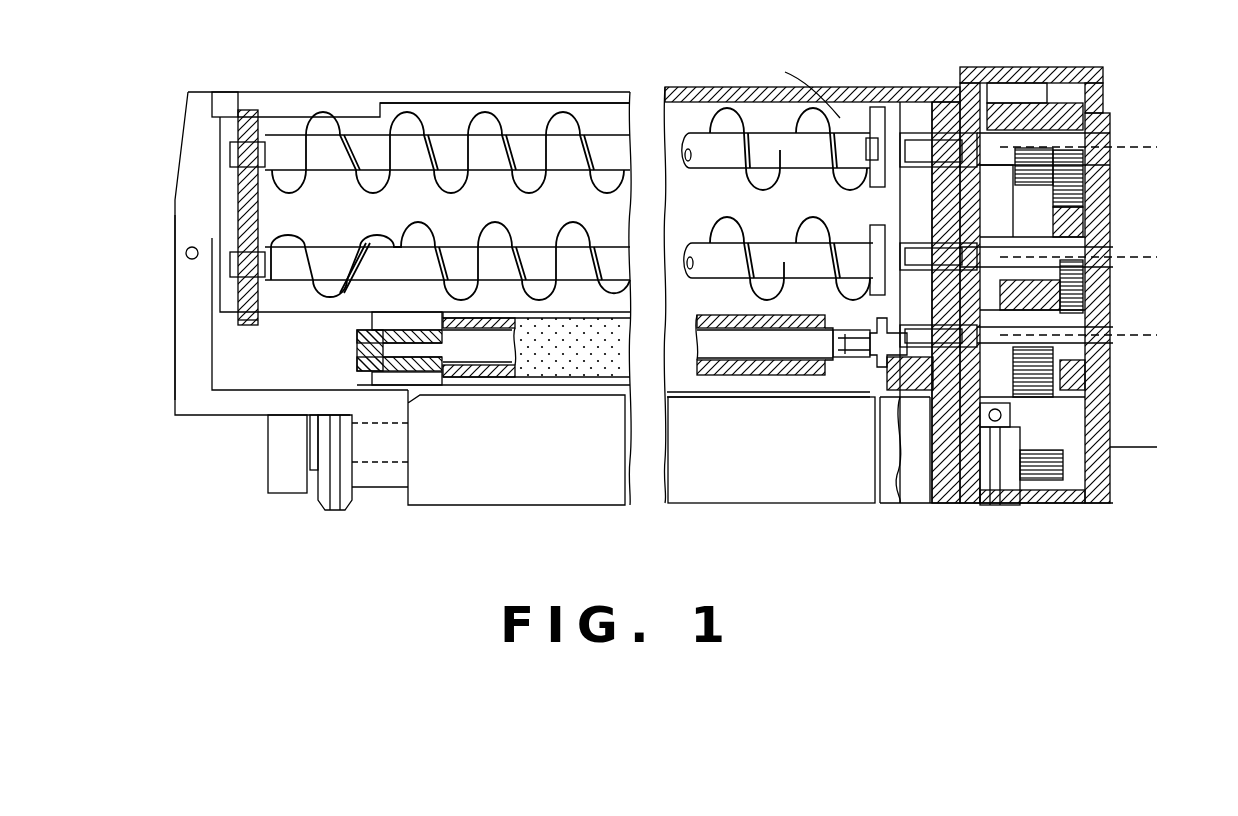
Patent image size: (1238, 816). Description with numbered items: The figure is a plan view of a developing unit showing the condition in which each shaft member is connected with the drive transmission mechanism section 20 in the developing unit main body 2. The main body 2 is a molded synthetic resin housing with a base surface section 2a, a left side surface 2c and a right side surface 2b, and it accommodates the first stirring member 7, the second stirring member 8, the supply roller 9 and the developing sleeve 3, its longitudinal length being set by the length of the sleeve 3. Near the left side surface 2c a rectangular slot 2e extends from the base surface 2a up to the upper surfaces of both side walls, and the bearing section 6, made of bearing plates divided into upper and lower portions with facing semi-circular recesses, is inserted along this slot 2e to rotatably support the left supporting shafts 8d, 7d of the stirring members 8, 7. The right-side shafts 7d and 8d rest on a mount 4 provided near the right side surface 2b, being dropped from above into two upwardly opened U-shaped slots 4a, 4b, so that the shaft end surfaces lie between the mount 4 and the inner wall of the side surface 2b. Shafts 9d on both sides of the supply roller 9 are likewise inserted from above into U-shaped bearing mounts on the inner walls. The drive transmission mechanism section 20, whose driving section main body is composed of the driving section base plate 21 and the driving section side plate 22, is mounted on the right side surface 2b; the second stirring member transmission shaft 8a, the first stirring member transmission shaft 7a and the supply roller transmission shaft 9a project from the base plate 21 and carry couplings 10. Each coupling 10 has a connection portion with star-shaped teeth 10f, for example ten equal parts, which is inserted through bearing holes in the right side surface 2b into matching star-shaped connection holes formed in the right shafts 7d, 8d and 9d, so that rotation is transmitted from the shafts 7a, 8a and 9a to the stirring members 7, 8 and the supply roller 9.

The developing unit main body 2 is at (360, 92).
The base surface section 2a is at (448, 205).
The right side surface 2b is at (948, 100).
The left side surface 2c is at (175, 287).
The rectangular slot 2e is at (238, 108).
The developing sleeve 3 is at (833, 503).
The mount 4 is at (897, 118).
The U-shaped slot 4a is at (902, 105).
The U-shaped slot 4b is at (870, 318).
The bearing section 6 is at (238, 208).
The first stirring member 7 is at (684, 297).
The first stirring member transmission shaft 7a is at (1113, 268).
The supporting shaft 7d is at (265, 262).
The second stirring member 8 is at (532, 147).
The second stirring member transmission shaft 8a is at (1100, 143).
The supporting shaft 8d is at (258, 152).
The supply roller 9 is at (665, 350).
The supply roller transmission shaft 9a is at (1110, 330).
The shaft 9d is at (428, 350).
The coupling 10 is at (925, 145).
The star-shaped teeth 10f is at (835, 345).
The drive transmission mechanism section 20 is at (1063, 53).
The driving section base plate 21 is at (962, 100).
The driving section side plate 22 is at (1107, 97).